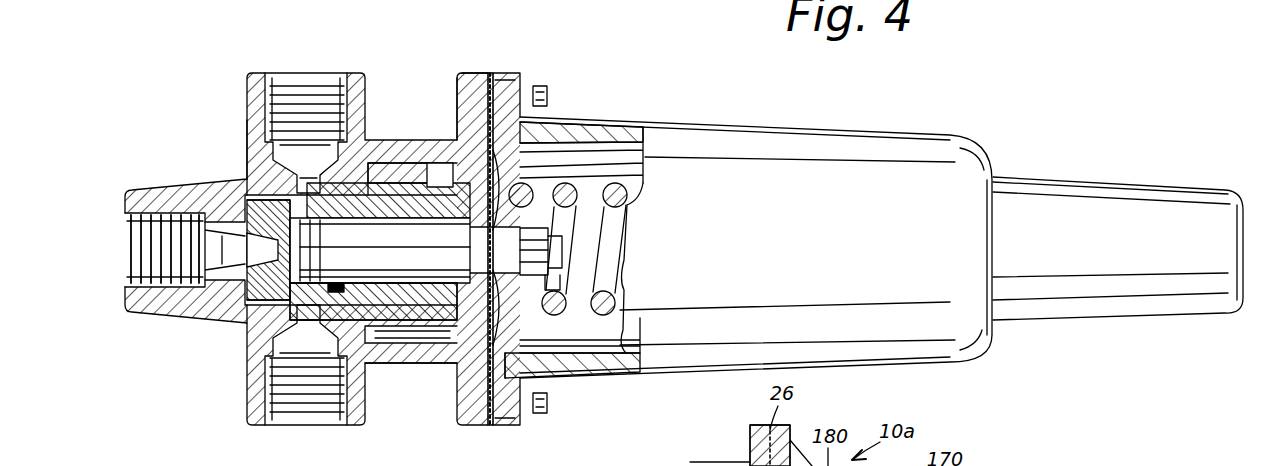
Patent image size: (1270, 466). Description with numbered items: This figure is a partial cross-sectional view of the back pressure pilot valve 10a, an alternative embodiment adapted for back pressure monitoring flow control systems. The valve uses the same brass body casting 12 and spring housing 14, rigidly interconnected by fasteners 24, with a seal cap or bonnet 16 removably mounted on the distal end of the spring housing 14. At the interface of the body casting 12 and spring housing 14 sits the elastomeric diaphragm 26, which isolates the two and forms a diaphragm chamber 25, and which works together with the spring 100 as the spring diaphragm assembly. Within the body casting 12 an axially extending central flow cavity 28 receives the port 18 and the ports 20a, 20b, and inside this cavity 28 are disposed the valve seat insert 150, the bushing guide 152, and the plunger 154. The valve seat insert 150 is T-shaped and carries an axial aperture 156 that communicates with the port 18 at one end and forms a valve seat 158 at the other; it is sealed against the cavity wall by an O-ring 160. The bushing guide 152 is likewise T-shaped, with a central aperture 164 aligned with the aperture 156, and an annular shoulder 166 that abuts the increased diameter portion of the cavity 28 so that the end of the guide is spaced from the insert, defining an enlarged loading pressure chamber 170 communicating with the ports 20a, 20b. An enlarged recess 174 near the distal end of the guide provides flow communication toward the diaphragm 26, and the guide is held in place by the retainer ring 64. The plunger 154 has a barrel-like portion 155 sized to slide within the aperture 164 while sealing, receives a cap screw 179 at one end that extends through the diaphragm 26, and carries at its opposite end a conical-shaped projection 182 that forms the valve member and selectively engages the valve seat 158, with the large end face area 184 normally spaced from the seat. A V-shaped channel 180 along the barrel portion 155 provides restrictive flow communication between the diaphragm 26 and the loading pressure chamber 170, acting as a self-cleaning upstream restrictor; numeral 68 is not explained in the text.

The back pressure pilot valve 10a is at (968, 128).
The body casting 12 is at (476, 425).
The spring housing 14 is at (880, 150).
The seal cap or bonnet 16 is at (1130, 192).
The port 18 is at (127, 297).
The port 20a is at (295, 405).
The port 20b is at (303, 85).
The fasteners 24 is at (548, 96).
The diaphragm chamber 25 is at (470, 110).
The diaphragm 26 is at (494, 75).
The central flow cavity 28 is at (398, 345).
The retainer ring 64 is at (524, 337).
The bottom wall 68 is at (445, 366).
The spring 100 is at (630, 205).
The valve seat insert 150 is at (262, 292).
The bushing guide 152 is at (405, 172).
The plunger 154 is at (380, 284).
The barrel-like portion 155 is at (556, 276).
The axial aperture 156 is at (205, 250).
The valve seat 158 is at (312, 248).
The O-ring 160 is at (258, 330).
The central aperture 164 is at (380, 245).
The annular shoulder 166 is at (372, 165).
The loading pressure chamber 170 is at (288, 195).
The enlarged recess 174 is at (522, 160).
The cap screw 179 is at (610, 255).
The V-shaped channel 180 is at (345, 278).
The conical-shaped projection 182 is at (250, 210).
The end face area 184 is at (250, 194).